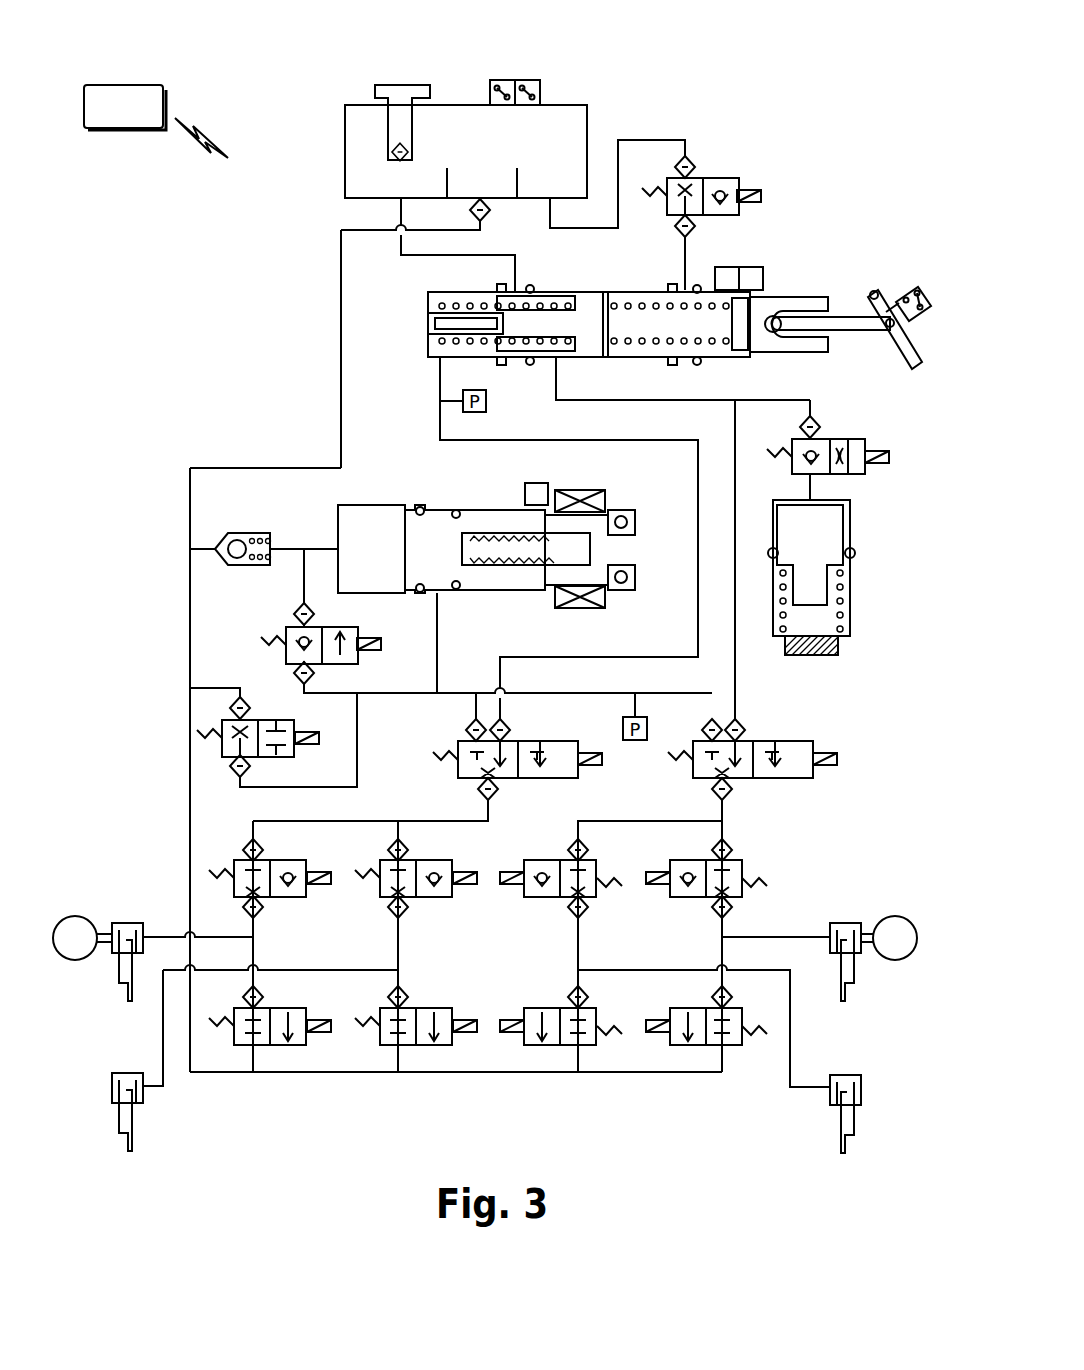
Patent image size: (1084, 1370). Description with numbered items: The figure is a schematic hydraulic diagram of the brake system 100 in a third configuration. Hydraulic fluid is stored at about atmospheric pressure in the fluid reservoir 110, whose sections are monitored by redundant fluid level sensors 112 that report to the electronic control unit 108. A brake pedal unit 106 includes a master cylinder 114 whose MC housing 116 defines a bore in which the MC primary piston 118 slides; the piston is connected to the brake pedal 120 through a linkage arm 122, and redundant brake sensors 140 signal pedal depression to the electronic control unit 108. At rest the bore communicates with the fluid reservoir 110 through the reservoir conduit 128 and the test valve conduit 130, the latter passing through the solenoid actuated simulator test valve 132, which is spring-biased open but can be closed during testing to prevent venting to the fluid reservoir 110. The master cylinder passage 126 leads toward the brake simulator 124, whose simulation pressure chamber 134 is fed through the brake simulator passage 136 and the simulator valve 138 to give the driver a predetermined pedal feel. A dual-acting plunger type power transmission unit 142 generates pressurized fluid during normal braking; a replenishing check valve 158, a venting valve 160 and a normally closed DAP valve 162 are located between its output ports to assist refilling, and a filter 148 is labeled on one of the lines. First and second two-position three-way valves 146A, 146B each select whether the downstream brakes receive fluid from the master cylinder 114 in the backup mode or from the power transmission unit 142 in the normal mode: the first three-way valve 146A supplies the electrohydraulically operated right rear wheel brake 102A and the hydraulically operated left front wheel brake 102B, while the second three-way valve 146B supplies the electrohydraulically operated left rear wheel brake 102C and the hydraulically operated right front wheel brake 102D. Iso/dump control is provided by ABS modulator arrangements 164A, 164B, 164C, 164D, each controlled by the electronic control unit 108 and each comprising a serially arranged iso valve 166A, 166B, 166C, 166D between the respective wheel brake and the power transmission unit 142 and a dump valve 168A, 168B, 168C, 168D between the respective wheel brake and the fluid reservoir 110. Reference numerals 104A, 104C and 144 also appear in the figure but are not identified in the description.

The brake system 100 is at (822, 70).
The right rear wheel brake 102A is at (145, 926).
The left front wheel brake 102B is at (112, 1086).
The left rear wheel brake 102C is at (860, 930).
The right front wheel brake 102D is at (863, 1092).
The right rear electric motor 104A is at (96, 917).
The left rear electric motor 104C is at (905, 918).
The brake pedal unit 106 is at (876, 228).
The electronic control unit 108 is at (156, 121).
The fluid reservoir 110 is at (579, 100).
The fluid level sensor 112 is at (520, 80).
The master cylinder 114 is at (504, 313).
The MC housing 116 is at (618, 292).
The MC primary piston 118 is at (762, 310).
The brake pedal 120 is at (920, 300).
The linkage arm 122 is at (860, 330).
The brake simulator 124 is at (862, 567).
The master cylinder passage 126 is at (600, 400).
The reservoir conduit 128 is at (470, 255).
The test valve conduit 130 is at (687, 254).
The simulator test valve 132 is at (731, 176).
The simulation pressure chamber 134 is at (852, 533).
The brake simulator passage 136 is at (756, 400).
The simulator valve 138 is at (880, 444).
The brake sensor or switch 140 is at (761, 266).
The power transmission unit 142 is at (451, 498).
The plunger output line 144 is at (528, 440).
The first two-position three-way valve 146A is at (570, 783).
The second two-position three-way valve 146B is at (815, 737).
The filter 148 is at (297, 614).
The replenishing check valve 158 is at (245, 530).
The venting valve 160 is at (280, 722).
The normally closed DAP valve 162 is at (360, 633).
The first ABS modulator arrangement 164A is at (270, 1078).
The ABS modulator arrangement 164B is at (414, 1078).
The second ABS modulator arrangement 164C is at (703, 1078).
The ABS modulator arrangement 164D is at (557, 1078).
The iso valve 166A is at (277, 860).
The iso valve 166B is at (424, 860).
The iso valve 166C is at (698, 860).
The iso valve 166D is at (553, 860).
The dump valve 168A is at (278, 1008).
The dump valve 168B is at (426, 1008).
The dump valve 168C is at (698, 1008).
The dump valve 168D is at (553, 1008).